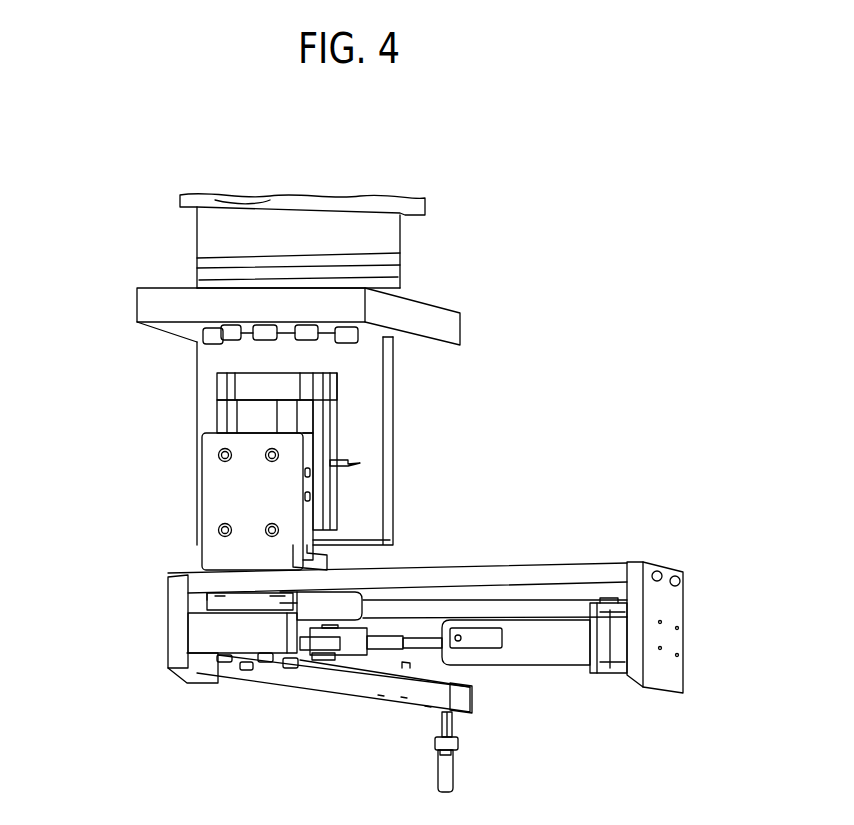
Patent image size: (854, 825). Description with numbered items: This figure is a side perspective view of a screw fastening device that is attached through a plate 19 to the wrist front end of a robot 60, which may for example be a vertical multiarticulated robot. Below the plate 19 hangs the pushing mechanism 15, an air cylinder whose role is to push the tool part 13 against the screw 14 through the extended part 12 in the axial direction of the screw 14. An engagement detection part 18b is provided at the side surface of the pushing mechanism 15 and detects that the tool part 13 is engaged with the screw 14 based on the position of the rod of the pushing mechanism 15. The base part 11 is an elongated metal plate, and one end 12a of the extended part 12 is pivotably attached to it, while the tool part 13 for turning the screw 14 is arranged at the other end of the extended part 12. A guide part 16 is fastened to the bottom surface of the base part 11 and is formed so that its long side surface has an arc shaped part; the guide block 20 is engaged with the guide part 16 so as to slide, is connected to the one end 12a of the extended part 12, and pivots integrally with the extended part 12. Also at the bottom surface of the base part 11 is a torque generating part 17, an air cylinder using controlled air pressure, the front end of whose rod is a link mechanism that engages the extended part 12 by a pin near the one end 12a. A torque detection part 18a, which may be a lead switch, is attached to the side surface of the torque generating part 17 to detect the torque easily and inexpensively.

The robot 60 is at (380, 237).
The plate 19 is at (150, 303).
The pushing mechanism 15 is at (188, 398).
The engagement detection part 18b is at (207, 428).
The base part 11 is at (583, 570).
The guide block 20 is at (238, 605).
The one end of the extended part 12a is at (218, 629).
The guide part 16 is at (345, 600).
The torque generating part 17 is at (545, 645).
The torque detection part 18a is at (487, 630).
The extended part 12 is at (347, 683).
The tool part 13 is at (452, 723).
The screw 14 is at (453, 775).